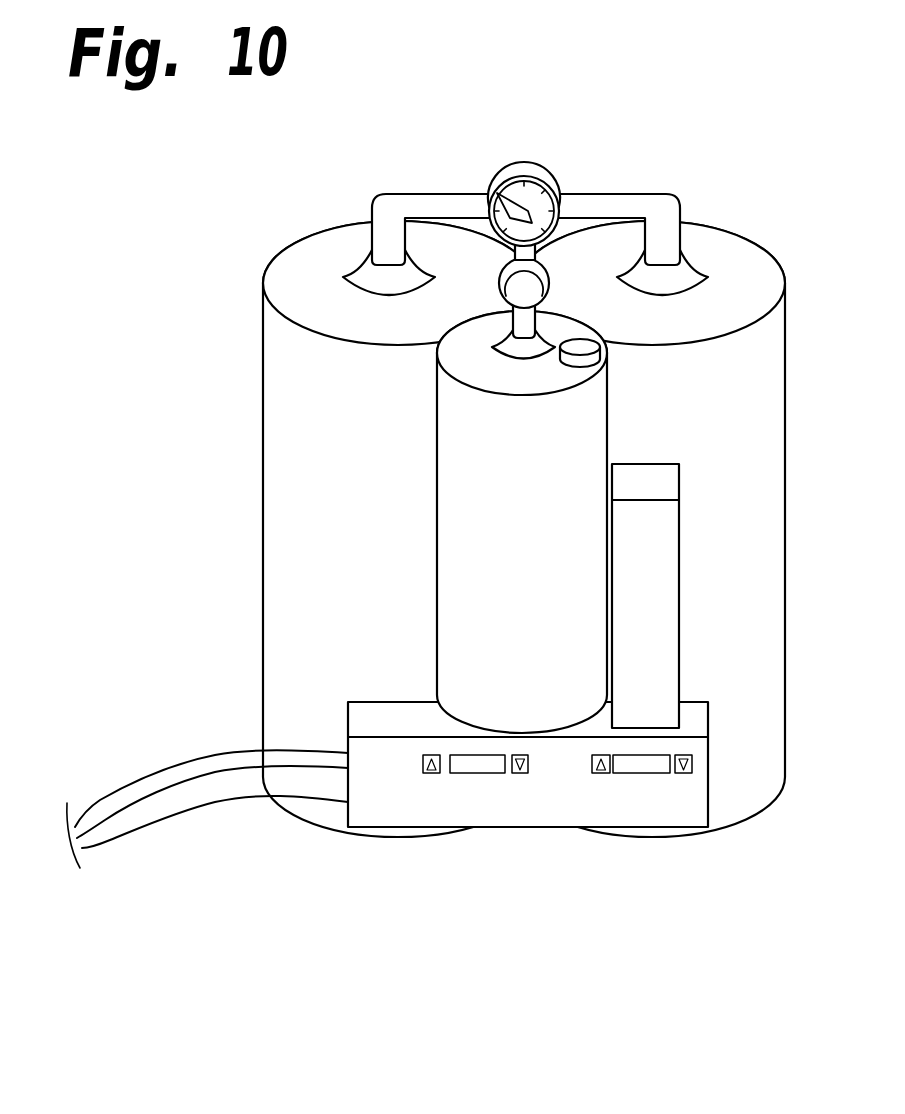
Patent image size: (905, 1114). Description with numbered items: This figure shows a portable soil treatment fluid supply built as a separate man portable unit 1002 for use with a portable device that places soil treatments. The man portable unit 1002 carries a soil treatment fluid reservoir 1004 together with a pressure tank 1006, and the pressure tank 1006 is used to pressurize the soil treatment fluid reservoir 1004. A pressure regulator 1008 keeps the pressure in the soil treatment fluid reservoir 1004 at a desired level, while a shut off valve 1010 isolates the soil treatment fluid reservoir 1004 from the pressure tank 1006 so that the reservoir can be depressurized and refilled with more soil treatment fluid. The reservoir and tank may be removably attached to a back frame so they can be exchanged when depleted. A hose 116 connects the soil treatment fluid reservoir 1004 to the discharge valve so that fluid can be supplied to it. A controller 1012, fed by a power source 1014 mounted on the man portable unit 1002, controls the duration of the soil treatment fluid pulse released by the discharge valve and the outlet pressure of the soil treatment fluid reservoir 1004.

The man portable unit 1002 is at (470, 493).
The soil treatment fluid reservoir 1004 is at (463, 475).
The pressure tank 1006 is at (285, 377).
The pressure regulator 1008 is at (530, 162).
The shut off valve 1010 is at (535, 267).
The controller 1012 is at (538, 827).
The power source 1014 is at (663, 580).
The hose 116 is at (183, 755).